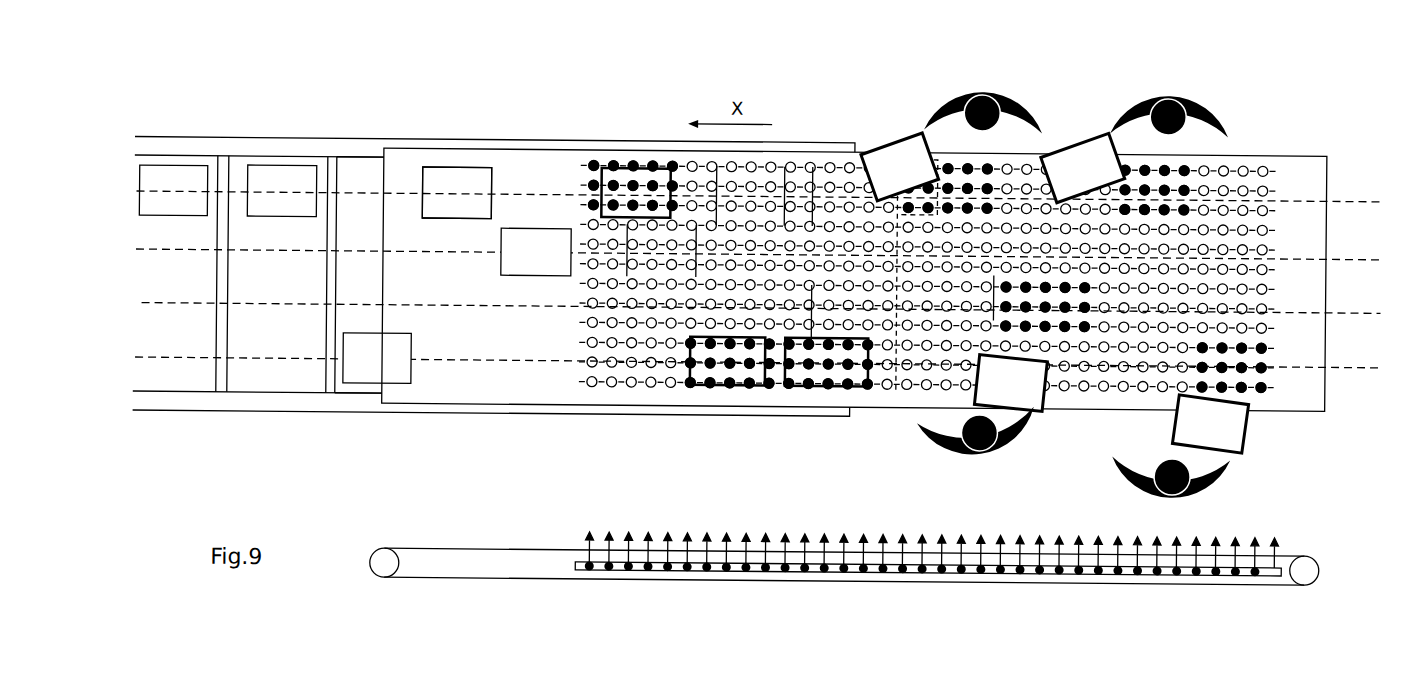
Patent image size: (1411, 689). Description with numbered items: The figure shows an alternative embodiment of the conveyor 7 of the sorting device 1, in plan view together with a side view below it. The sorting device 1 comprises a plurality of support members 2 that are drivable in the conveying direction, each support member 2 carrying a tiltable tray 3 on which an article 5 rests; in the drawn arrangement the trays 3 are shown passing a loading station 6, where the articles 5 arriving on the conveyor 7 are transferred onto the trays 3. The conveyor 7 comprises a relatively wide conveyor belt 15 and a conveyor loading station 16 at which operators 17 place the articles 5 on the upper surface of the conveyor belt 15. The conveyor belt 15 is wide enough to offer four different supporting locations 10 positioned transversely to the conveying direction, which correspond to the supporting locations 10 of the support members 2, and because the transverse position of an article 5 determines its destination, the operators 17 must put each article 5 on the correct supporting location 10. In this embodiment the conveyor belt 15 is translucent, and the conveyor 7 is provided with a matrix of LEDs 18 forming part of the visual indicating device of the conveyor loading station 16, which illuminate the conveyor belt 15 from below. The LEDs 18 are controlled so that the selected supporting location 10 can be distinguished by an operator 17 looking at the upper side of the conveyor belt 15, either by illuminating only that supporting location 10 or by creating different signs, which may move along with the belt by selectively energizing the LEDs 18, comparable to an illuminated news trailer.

The sorting device 1 is at (203, 60).
The support member 2 is at (235, 148).
The tray 3 is at (325, 168).
The article 5 is at (285, 176).
The loading station 6 is at (400, 131).
The conveyor 7 is at (545, 140).
The supporting location 10 is at (913, 385).
The conveyor belt 15 is at (515, 162).
The conveyor loading station 16 is at (878, 79).
The operator 17 is at (1128, 454).
The LEDs 18 is at (996, 546).